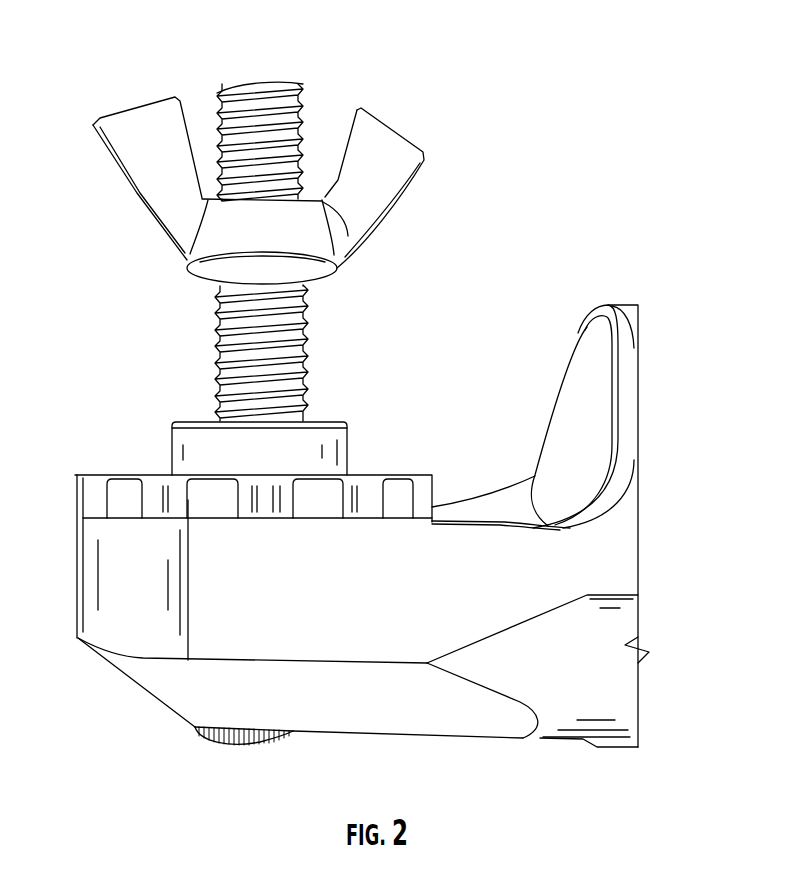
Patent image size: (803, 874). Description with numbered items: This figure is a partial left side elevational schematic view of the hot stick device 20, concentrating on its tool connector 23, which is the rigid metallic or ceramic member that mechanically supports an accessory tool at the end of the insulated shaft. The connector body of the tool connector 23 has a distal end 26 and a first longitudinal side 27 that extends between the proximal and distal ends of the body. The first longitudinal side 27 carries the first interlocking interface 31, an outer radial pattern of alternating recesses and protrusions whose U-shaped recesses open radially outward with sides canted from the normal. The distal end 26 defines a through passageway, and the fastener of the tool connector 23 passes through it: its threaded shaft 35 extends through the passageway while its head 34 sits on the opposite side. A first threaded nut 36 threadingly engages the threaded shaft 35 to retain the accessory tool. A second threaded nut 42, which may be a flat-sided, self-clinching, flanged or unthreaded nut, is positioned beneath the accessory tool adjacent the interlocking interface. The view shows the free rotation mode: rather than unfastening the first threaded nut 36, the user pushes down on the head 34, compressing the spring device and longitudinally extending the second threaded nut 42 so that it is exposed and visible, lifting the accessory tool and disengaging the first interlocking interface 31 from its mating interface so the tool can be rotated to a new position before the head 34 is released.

The hot stick device 20 is at (490, 135).
The tool connector 23 is at (657, 385).
The distal end 26 is at (553, 588).
The first longitudinal side 27 is at (512, 500).
The first interlocking interface 31 is at (115, 487).
The head 34 is at (236, 745).
The threaded shaft 35 is at (245, 318).
The first threaded nut 36 is at (125, 118).
The second threaded nut 42 is at (290, 447).